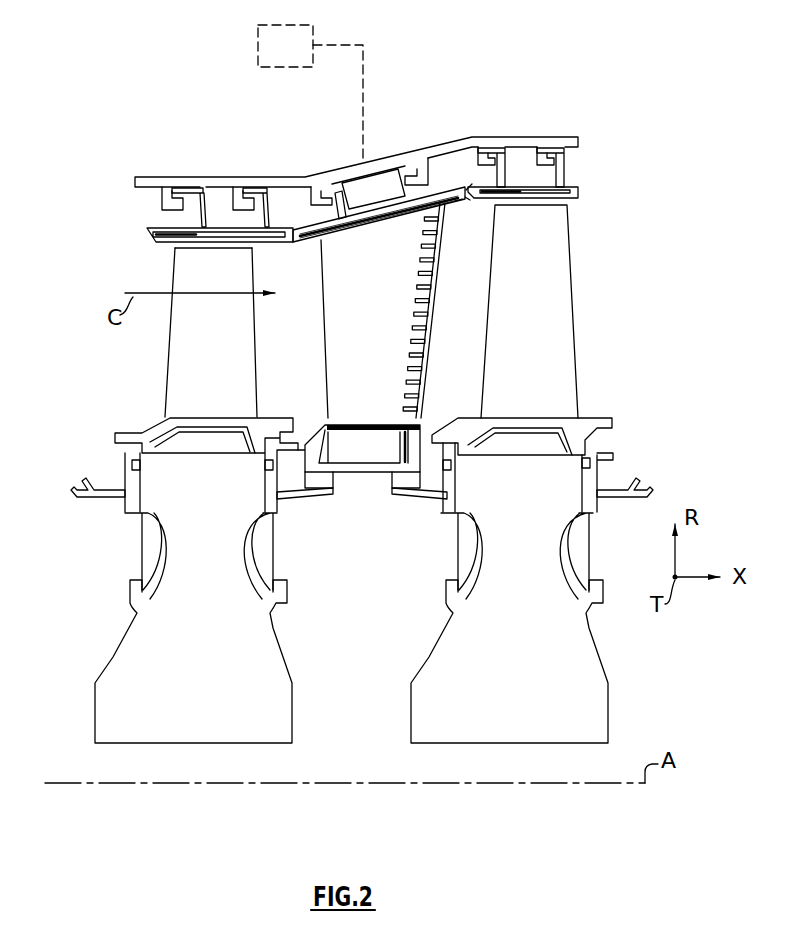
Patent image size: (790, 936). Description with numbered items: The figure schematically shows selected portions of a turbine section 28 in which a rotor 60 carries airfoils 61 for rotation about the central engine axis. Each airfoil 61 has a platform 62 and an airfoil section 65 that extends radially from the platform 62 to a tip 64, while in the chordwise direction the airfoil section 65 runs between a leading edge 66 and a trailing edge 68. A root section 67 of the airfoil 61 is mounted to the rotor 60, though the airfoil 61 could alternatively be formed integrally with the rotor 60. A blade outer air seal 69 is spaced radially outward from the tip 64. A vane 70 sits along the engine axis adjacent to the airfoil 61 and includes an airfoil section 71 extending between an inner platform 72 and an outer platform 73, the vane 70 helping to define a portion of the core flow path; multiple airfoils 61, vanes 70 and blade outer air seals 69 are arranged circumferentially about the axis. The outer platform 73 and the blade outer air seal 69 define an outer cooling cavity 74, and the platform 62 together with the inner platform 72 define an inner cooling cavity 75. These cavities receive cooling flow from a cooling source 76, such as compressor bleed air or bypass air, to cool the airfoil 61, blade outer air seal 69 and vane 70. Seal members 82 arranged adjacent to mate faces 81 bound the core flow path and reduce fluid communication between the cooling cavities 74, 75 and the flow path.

The turbine section 28 is at (75, 130).
The cooling source 76 is at (299, 64).
The outer cooling cavity 74 is at (386, 200).
The blade outer air seal 69 is at (144, 231).
The tip 64 is at (192, 240).
The seal member 82 is at (346, 220).
The mate face 81 is at (482, 197).
The outer platform 73 is at (458, 202).
The vane 70 is at (441, 306).
The airfoil section 71 is at (393, 373).
The inner platform 72 is at (435, 418).
The airfoil 61 is at (261, 331).
The airfoil section 65 is at (195, 338).
The leading edge 66 is at (168, 373).
The trailing edge 68 is at (257, 373).
The platform 62 is at (125, 433).
The root section 67 is at (157, 490).
The inner cooling cavity 75 is at (372, 576).
The rotor 60 is at (109, 656).